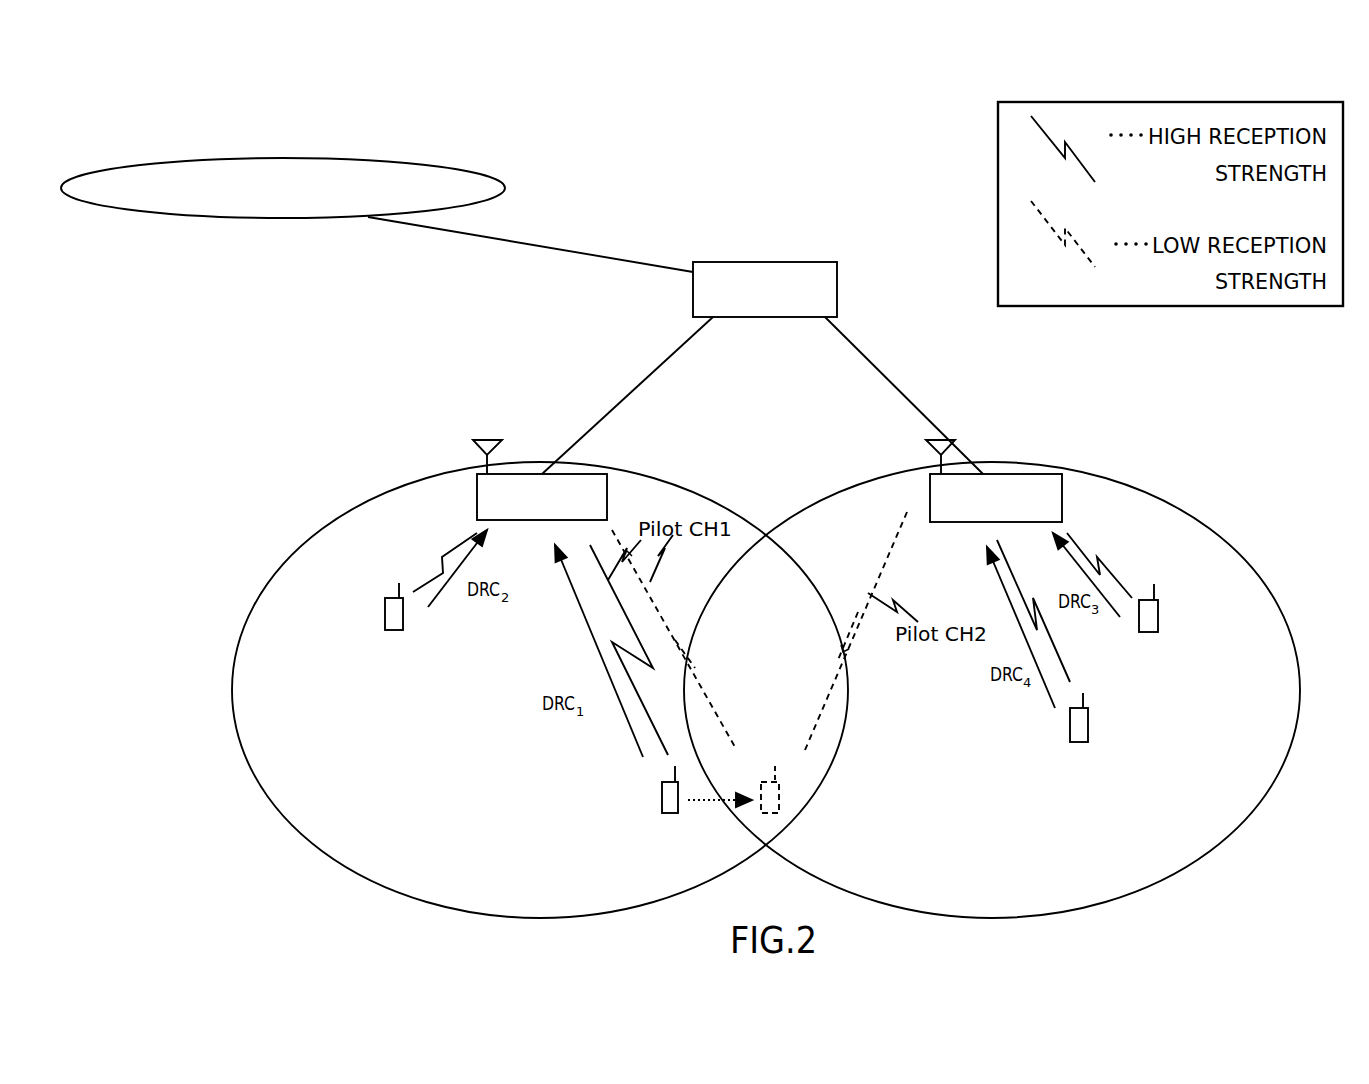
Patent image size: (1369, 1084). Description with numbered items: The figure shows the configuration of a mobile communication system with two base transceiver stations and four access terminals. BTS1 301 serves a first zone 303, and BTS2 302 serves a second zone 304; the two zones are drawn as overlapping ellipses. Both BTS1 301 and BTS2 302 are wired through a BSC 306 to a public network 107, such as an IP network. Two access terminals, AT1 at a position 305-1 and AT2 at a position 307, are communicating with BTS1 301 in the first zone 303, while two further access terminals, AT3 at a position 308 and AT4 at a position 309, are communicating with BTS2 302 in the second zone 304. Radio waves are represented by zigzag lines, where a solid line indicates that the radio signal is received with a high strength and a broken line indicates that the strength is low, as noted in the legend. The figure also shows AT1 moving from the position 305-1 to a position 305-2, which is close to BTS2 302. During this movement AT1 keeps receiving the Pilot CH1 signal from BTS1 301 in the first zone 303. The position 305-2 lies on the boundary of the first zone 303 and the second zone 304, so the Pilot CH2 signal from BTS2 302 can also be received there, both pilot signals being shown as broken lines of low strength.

The public network 107 is at (332, 182).
The BSC 306 is at (813, 276).
The BTS1 301 is at (497, 462).
The BTS2 302 is at (1017, 463).
The first zone 303 is at (511, 690).
The second zone 304 is at (992, 681).
The position of AT1 305-1 is at (622, 803).
The position of AT1 305-2 is at (825, 802).
The position of AT2 307 is at (375, 635).
The position of AT3 308 is at (1190, 632).
The position of AT4 309 is at (1107, 746).